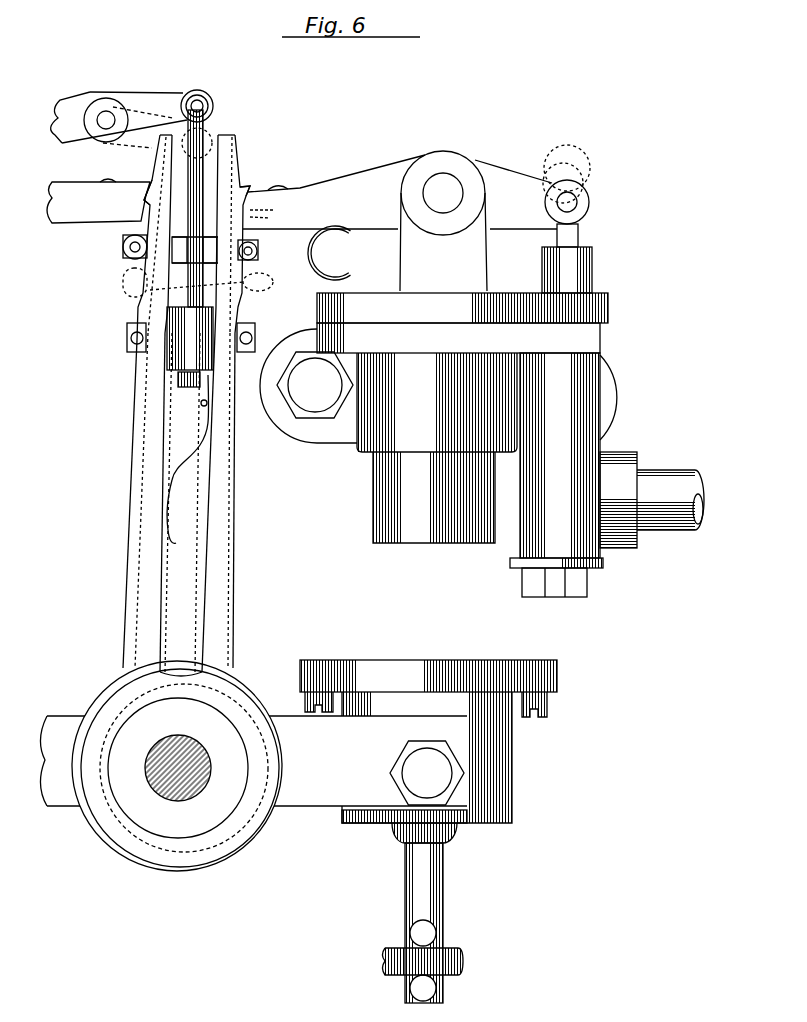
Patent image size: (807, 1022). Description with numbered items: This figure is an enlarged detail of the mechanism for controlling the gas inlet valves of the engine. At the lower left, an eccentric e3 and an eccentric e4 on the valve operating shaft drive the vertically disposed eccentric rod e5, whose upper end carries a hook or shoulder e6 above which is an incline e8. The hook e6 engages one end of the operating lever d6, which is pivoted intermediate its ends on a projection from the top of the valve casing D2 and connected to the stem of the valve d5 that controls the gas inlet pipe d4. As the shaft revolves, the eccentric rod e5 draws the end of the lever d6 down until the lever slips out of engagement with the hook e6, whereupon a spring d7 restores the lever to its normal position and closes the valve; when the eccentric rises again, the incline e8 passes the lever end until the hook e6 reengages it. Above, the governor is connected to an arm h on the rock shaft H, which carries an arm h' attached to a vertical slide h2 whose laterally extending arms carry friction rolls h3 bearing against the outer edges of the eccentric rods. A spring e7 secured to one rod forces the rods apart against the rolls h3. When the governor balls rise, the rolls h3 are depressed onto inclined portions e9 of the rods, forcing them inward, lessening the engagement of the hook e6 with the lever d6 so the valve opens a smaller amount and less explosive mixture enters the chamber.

The rock shaft H is at (103, 112).
The arm h is at (66, 117).
The arm h' is at (190, 107).
The incline e8 is at (152, 132).
The hook or shoulder e6 is at (152, 176).
The operating lever d6 is at (68, 210).
The studs or friction rolls h3 is at (127, 253).
The inclined portions e9 is at (133, 285).
The vertical slide h2 is at (192, 290).
The spring d7 is at (323, 248).
The valve d5 is at (580, 238).
The gas inlet pipe d4 is at (690, 482).
The valve casing D2 is at (387, 432).
The eccentric rod e5 is at (128, 468).
The spring e7 is at (130, 402).
The eccentric e4 is at (108, 820).
The eccentric e3 is at (230, 840).